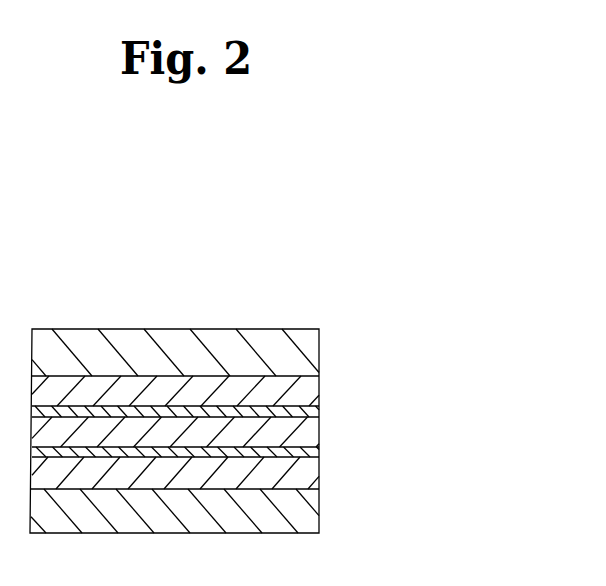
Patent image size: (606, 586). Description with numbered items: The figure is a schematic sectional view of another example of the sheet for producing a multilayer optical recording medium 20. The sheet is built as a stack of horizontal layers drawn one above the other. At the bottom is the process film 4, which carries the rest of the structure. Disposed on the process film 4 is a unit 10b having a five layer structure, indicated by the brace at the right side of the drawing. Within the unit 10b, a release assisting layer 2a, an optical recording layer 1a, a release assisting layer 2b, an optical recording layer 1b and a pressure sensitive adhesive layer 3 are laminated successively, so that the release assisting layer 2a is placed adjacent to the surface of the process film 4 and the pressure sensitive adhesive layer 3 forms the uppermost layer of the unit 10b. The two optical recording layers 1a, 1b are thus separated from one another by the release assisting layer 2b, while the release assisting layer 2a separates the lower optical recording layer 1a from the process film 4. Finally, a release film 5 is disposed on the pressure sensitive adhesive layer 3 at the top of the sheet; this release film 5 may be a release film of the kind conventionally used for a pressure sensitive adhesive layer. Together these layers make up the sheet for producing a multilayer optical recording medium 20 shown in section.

The sheet for producing a multilayer optical recording medium 20 is at (234, 307).
The release film 5 is at (308, 351).
The pressure sensitive adhesive layer 3 is at (313, 393).
The optical recording layer 1b is at (312, 411).
The release assisting layer 2b is at (310, 436).
The optical recording layer 1a is at (311, 455).
The release assisting layer 2a is at (311, 480).
The process film 4 is at (306, 514).
The unit 10b is at (412, 373).